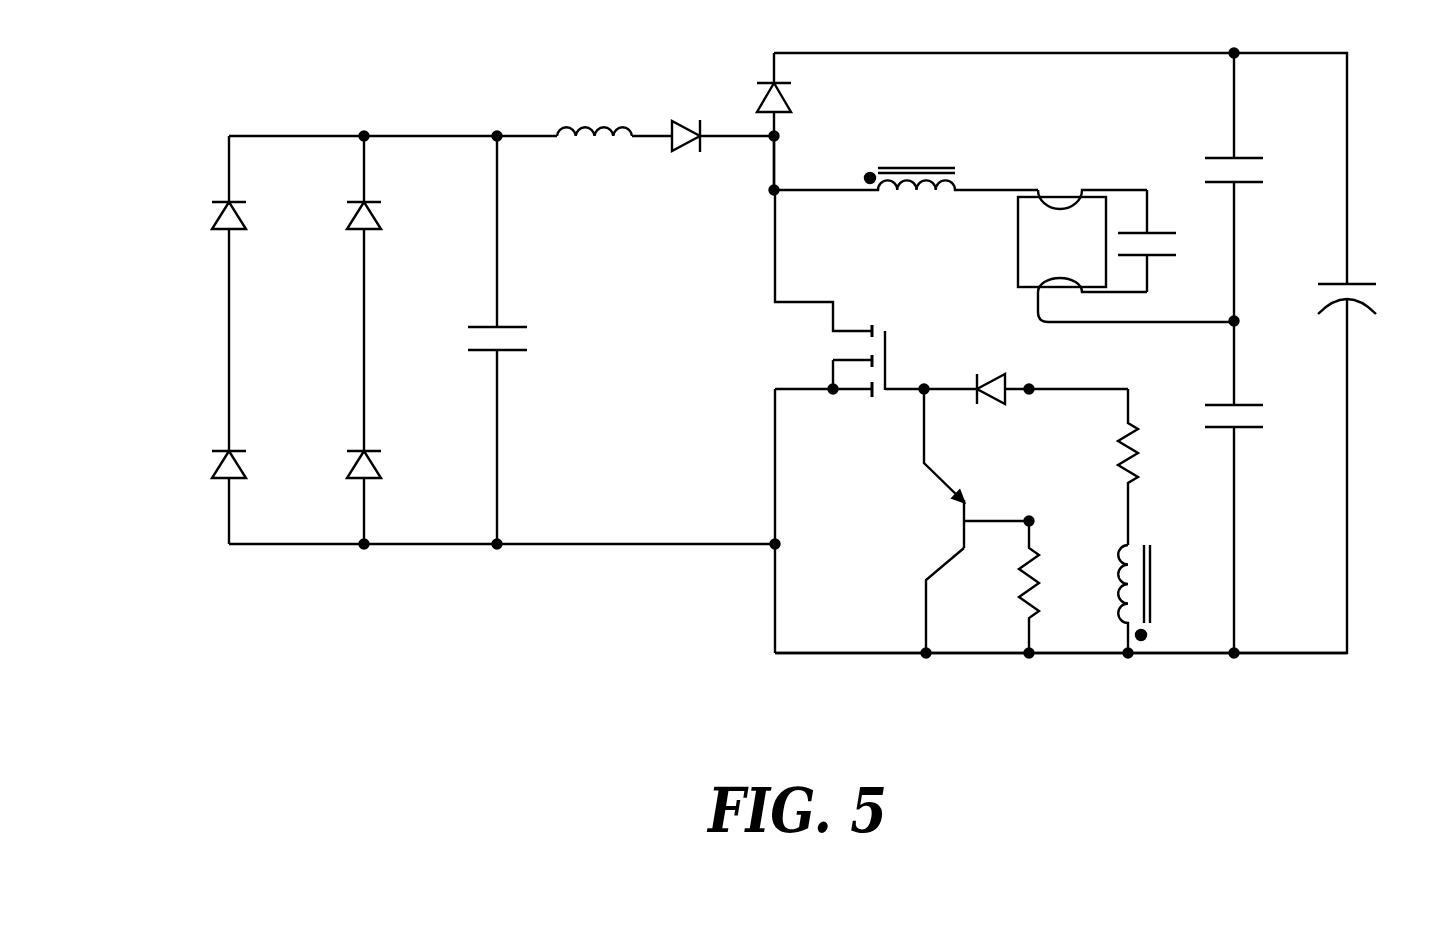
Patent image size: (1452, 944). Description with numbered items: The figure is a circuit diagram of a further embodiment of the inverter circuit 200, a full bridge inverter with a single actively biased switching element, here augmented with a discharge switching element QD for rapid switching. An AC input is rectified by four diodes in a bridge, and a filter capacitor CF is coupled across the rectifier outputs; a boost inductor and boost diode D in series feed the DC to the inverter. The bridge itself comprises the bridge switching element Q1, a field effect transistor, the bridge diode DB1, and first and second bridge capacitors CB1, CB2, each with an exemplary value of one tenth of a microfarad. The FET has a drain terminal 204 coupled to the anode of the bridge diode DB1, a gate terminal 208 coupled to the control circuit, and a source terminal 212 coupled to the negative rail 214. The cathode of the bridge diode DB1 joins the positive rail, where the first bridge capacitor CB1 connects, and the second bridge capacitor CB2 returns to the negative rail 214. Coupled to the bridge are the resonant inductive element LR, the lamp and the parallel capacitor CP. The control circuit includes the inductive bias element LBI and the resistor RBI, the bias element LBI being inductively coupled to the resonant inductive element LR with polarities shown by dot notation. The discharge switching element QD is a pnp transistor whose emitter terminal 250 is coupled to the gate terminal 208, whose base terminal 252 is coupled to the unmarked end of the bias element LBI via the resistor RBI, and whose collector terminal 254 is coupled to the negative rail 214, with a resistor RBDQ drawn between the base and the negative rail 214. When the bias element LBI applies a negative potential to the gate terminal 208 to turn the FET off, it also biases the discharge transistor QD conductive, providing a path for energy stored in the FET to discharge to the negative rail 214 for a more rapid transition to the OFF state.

The inverter circuit 200 is at (1050, 107).
The drain terminal 204 is at (800, 301).
The gate terminal 208 is at (907, 387).
The source terminal 212 is at (825, 393).
The negative rail 214 is at (888, 657).
The emitter terminal 250 is at (923, 428).
The base terminal 252 is at (1000, 520).
The collector terminal 254 is at (943, 559).
The boost diode D is at (796, 121).
The resonant inductive element LR is at (906, 157).
The parallel capacitor CP is at (1171, 241).
The first bridge capacitor CB1 is at (1263, 187).
The second bridge capacitor CB2 is at (1265, 487).
The filter capacitor CF is at (522, 340).
The bridge switching element Q1 is at (825, 360).
The bridge diode DB1 is at (1026, 366).
The discharge switching element QD is at (933, 521).
The resistor RBI is at (1097, 467).
The inductive bias element LBI is at (1159, 599).
The resistor RBDQ is at (991, 587).